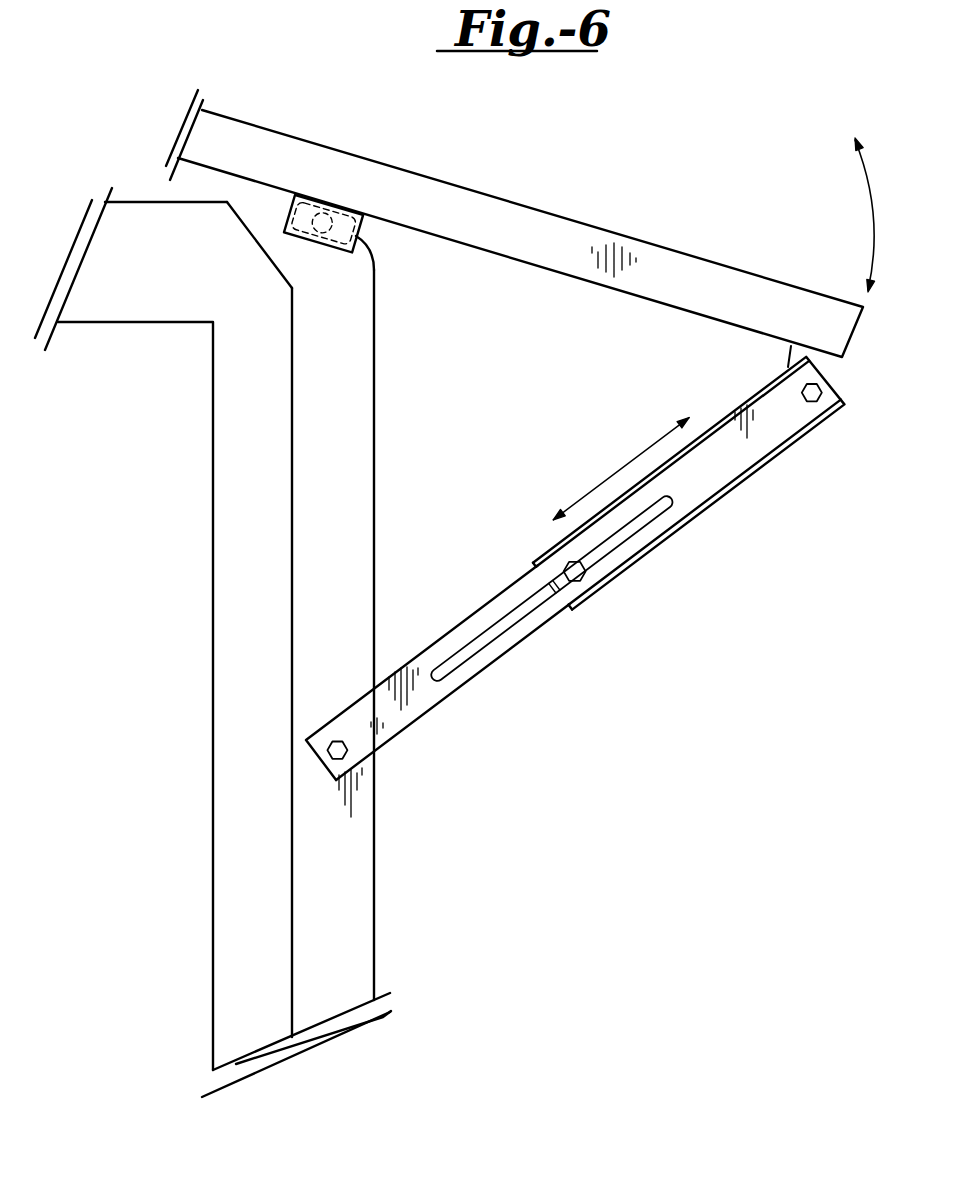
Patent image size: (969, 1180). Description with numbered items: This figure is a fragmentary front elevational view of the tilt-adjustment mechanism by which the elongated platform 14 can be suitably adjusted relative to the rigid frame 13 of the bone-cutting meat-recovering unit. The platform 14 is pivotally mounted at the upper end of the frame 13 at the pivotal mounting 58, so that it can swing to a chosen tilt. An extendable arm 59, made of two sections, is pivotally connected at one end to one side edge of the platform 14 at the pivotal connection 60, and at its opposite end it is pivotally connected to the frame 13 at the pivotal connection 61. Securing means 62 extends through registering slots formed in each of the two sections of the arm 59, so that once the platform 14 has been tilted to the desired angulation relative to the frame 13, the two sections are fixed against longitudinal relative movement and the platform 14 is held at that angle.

The rigid frame 13 is at (340, 436).
The elongated platform 14 is at (575, 211).
The pivotal mounting 58 is at (318, 236).
The extendable arm 59 is at (738, 467).
The pivotal connection to platform 60 is at (819, 398).
The pivotal connection to frame 61 is at (326, 764).
The securing means 62 is at (583, 564).